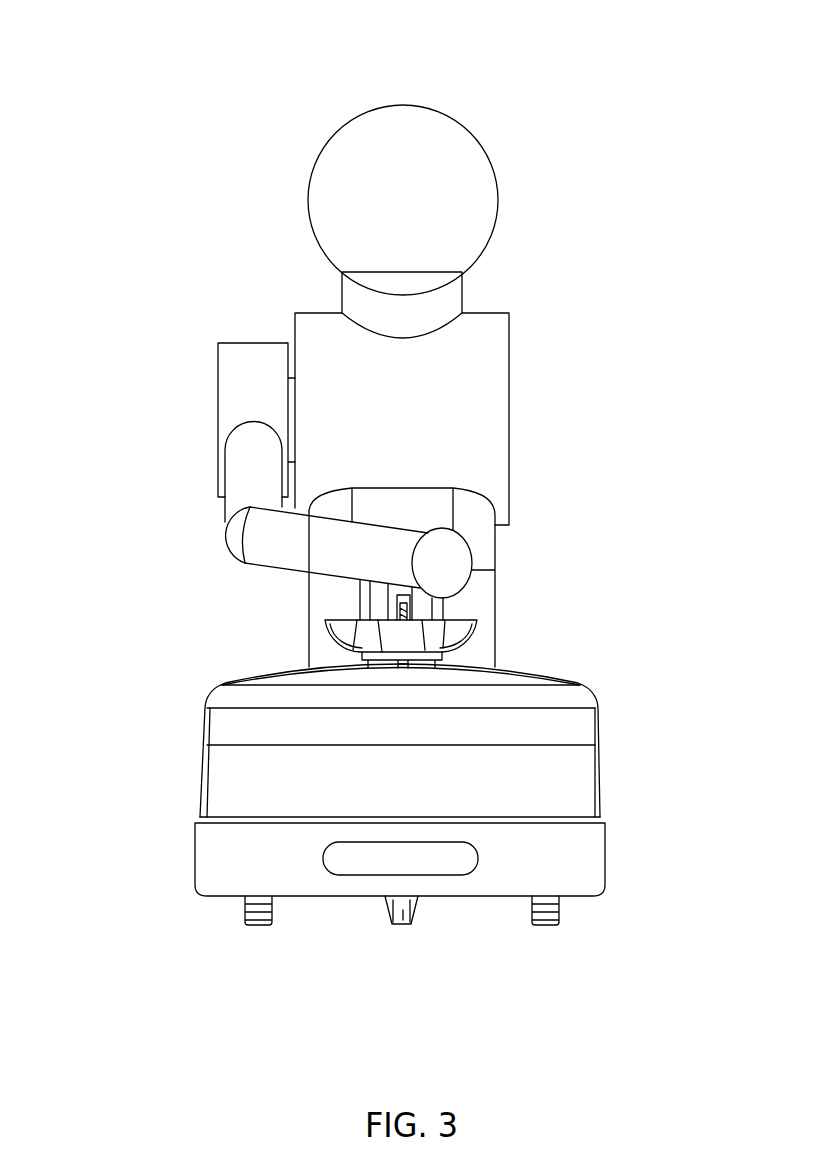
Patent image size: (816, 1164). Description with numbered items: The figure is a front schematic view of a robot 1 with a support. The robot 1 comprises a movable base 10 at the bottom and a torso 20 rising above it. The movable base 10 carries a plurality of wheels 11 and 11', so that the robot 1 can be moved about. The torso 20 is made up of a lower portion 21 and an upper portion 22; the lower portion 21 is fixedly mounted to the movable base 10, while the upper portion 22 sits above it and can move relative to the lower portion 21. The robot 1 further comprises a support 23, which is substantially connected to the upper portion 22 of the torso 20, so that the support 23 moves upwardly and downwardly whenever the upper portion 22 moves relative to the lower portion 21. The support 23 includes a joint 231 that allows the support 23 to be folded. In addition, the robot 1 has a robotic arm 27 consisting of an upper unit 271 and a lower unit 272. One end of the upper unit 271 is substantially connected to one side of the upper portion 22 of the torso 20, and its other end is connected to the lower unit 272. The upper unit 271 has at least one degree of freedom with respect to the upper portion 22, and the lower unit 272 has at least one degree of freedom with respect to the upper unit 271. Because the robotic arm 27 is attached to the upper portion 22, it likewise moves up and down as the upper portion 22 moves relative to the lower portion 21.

The robot 1 is at (620, 147).
The movable base 10 is at (578, 785).
The wheel 11 is at (434, 937).
The wheel 11' is at (434, 932).
The torso 20 is at (553, 357).
The lower portion 21 is at (483, 602).
The upper portion 22 is at (468, 358).
The support 23 is at (475, 630).
The joint 231 is at (388, 613).
The robotic arm 27 is at (200, 453).
The upper unit 271 is at (243, 485).
The lower unit 272 is at (300, 545).